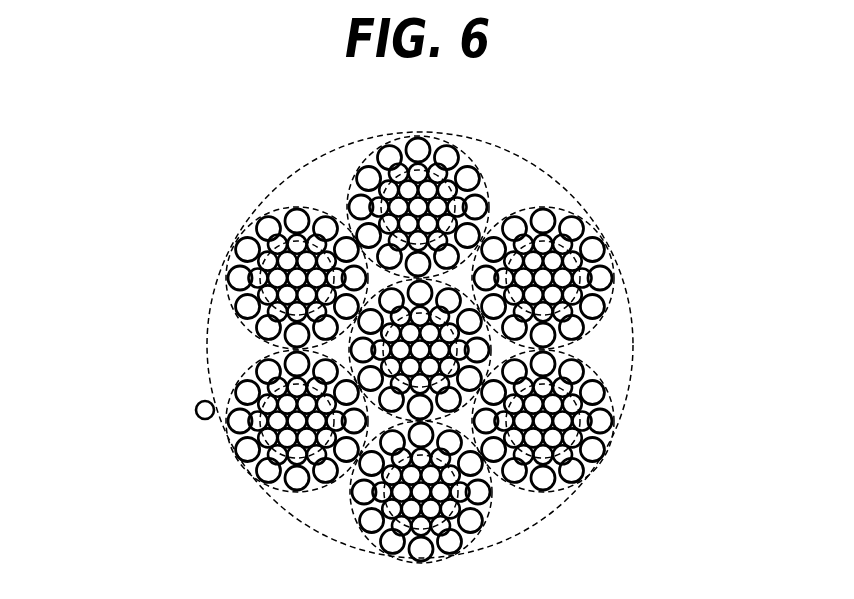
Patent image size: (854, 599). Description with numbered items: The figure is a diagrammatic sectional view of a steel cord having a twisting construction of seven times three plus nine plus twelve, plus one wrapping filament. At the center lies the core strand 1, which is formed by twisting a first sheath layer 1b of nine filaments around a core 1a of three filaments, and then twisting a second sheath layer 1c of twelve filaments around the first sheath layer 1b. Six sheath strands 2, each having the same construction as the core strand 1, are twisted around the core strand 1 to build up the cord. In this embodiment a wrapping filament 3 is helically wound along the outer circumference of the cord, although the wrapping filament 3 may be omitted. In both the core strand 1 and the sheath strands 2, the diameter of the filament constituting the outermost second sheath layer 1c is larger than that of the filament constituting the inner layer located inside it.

The core strand 1 is at (560, 352).
The core 1a is at (423, 197).
The first sheath layer 1b is at (460, 174).
The second sheath layer 1c is at (477, 204).
The sheath strands 2 is at (672, 123).
The wrapping filament 3 is at (200, 420).